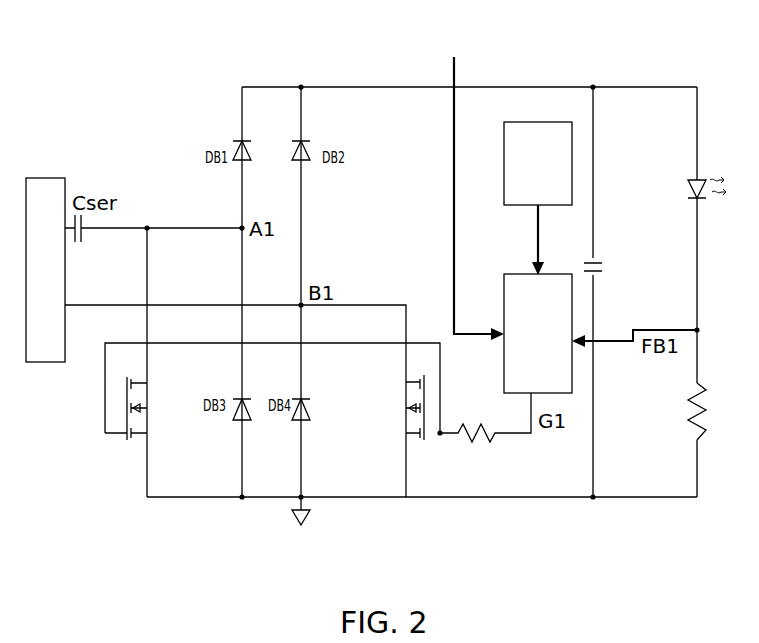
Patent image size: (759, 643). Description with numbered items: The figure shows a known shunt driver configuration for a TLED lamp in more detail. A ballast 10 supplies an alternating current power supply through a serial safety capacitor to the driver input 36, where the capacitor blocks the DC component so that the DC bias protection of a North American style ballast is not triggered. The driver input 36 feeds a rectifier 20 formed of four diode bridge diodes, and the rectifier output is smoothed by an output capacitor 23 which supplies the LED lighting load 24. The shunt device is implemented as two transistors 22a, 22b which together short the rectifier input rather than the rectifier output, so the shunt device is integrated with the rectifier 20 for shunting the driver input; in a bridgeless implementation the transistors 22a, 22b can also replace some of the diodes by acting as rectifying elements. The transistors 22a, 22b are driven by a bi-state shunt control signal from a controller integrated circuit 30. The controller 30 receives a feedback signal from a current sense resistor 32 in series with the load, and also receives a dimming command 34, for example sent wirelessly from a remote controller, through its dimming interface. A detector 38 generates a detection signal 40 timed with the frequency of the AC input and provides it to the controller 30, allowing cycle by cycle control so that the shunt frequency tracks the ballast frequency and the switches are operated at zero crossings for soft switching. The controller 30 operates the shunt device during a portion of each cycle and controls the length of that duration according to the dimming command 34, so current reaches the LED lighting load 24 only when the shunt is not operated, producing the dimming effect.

The ballast 10 is at (40, 178).
The rectifier 20 is at (265, 77).
The shunt device transistor 22a is at (178, 378).
The shunt device transistor 22b is at (406, 425).
The output capacitor 23 is at (599, 258).
The LED lighting load 24 is at (690, 181).
The controller integrated circuit 30 is at (504, 289).
The current sense resistor 32 is at (690, 415).
The dimming command 34 is at (455, 72).
The driver input 36 is at (242, 228).
The detector 38 is at (504, 172).
The detection signal 40 is at (538, 241).